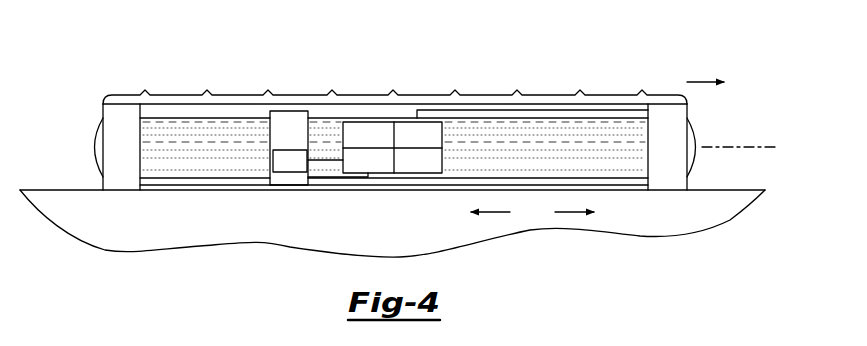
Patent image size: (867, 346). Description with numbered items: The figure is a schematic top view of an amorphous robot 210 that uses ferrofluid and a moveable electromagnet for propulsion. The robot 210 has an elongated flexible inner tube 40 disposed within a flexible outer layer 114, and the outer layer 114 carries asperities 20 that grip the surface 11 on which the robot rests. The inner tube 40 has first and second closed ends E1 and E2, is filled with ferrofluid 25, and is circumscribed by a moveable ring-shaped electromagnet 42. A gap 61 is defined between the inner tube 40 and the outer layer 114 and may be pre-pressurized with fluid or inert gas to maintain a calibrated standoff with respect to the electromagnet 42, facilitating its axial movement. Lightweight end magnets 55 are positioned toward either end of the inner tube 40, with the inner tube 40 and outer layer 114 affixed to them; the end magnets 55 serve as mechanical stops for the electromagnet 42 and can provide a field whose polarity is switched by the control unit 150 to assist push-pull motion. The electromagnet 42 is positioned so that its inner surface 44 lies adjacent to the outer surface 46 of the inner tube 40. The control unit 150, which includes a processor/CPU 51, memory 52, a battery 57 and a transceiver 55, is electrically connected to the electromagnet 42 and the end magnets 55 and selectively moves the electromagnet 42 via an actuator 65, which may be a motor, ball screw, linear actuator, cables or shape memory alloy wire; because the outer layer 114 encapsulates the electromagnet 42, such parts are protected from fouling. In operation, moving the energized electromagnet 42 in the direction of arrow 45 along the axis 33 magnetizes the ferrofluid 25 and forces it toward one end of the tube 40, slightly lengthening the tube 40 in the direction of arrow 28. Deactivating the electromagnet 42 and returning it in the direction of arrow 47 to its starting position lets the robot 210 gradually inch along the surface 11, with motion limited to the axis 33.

The surface 11 is at (767, 189).
The asperities 20 is at (510, 94).
The ferrofluid 25 is at (474, 126).
The arrow 28 is at (700, 82).
The axis 33 is at (763, 145).
The inner tube 40 is at (228, 162).
The electromagnet 42 is at (297, 137).
The inner surface 44 is at (312, 180).
The arrow 45 is at (573, 213).
The outer surface 46 is at (167, 109).
The arrow 47 is at (497, 214).
The processor/CPU 51 is at (371, 144).
The memory 52 is at (423, 144).
The end magnets 55 is at (128, 158).
The battery 57 is at (423, 169).
The gap 61 is at (263, 110).
The actuator 65 is at (287, 165).
The outer layer 114 is at (558, 95).
The control unit 150 is at (375, 121).
The amorphous robot 210 is at (741, 62).
The first closed end E1 is at (87, 140).
The second closed end E2 is at (703, 133).